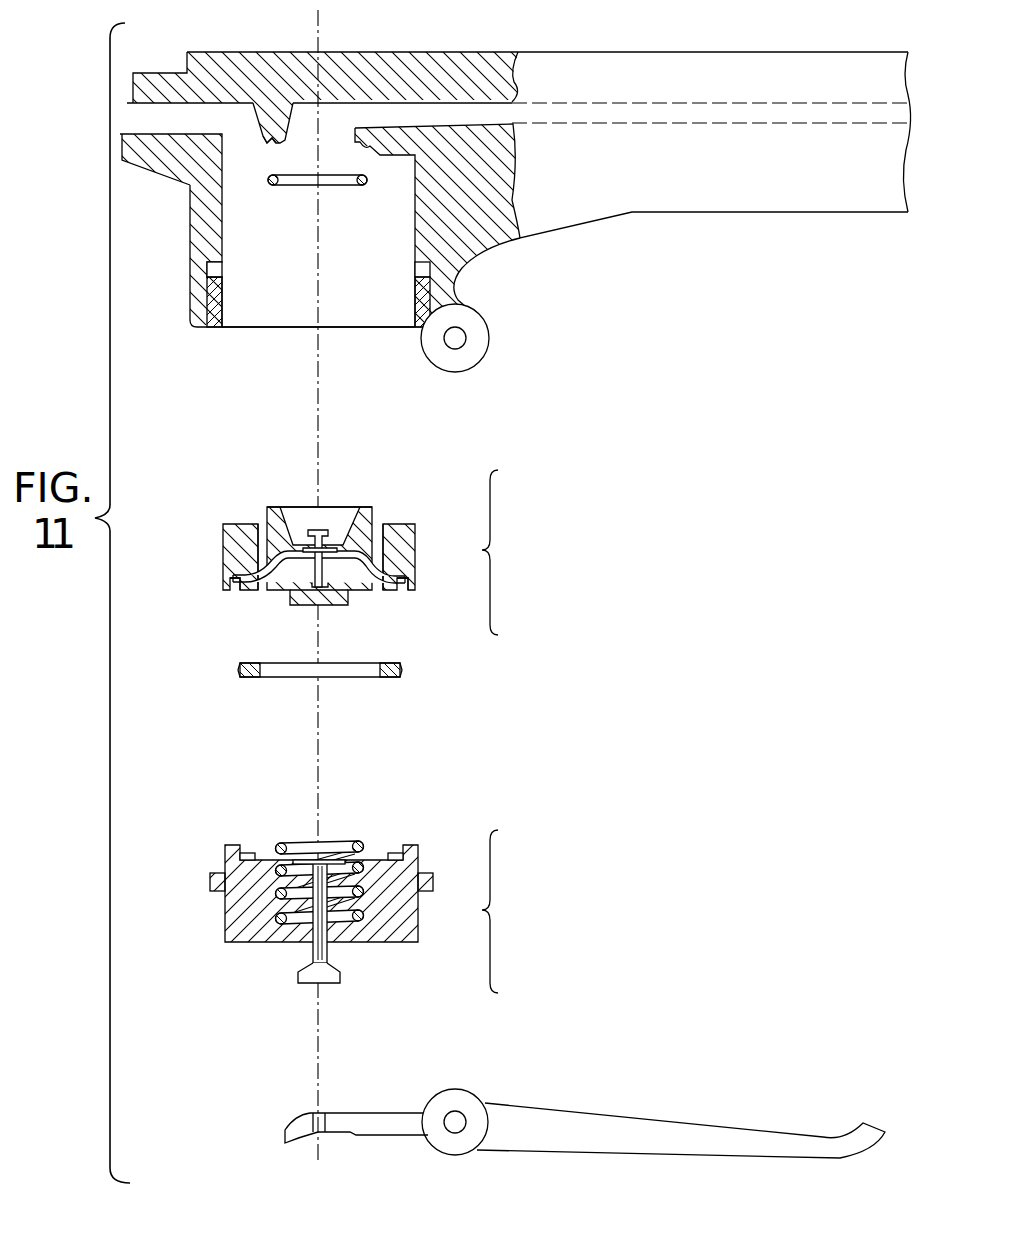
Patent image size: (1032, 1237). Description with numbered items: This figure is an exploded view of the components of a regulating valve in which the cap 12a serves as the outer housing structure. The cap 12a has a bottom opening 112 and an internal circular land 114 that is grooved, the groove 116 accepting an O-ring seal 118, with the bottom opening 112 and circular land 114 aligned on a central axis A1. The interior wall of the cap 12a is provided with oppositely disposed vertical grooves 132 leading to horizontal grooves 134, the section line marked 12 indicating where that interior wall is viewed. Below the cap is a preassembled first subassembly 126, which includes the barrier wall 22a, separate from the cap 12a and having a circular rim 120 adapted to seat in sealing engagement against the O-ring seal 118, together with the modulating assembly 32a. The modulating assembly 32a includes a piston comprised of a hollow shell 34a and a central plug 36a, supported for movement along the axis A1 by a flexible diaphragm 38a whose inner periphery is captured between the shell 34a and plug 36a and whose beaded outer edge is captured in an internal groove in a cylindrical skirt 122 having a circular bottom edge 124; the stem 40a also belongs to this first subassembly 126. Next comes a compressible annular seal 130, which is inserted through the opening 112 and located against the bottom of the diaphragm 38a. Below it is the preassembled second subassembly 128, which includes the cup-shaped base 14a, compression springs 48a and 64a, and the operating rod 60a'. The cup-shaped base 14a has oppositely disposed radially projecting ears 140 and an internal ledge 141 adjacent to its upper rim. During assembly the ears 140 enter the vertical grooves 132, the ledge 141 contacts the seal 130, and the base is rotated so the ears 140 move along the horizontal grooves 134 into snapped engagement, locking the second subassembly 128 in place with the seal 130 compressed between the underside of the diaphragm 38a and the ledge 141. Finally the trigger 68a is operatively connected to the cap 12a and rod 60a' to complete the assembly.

The cap 12a is at (372, 63).
The section line 12- 12 is at (396, 238).
The internal circular land 114 is at (257, 125).
The groove 116 is at (273, 142).
The O-ring seal 118 is at (273, 184).
The horizontal grooves 134 is at (207, 268).
The vertical grooves 132 is at (210, 305).
The bottom opening 112 is at (255, 328).
The first subassembly 126 is at (511, 552).
The circular rim 120 is at (398, 526).
The cylindrical skirt 122 is at (415, 548).
The circular bottom edge 124 is at (407, 588).
The hollow shell 34a is at (352, 592).
The central plug 36a is at (323, 605).
The barrier wall 22a is at (370, 522).
The flexible diaphragm 38a is at (402, 578).
The stem 40a is at (312, 528).
The modulating assembly 32a is at (262, 612).
The compressible annular seal 130 is at (402, 672).
The central axis A1 is at (320, 680).
The second subassembly 128 is at (511, 911).
The cup-shaped base 14a is at (245, 943).
The internal ledge 141 is at (397, 852).
The radially projecting ears 140 is at (210, 881).
The compression spring 48a is at (362, 917).
The operating rod 60a' is at (349, 922).
The compression spring 64a is at (303, 864).
The trigger 68a is at (528, 1140).